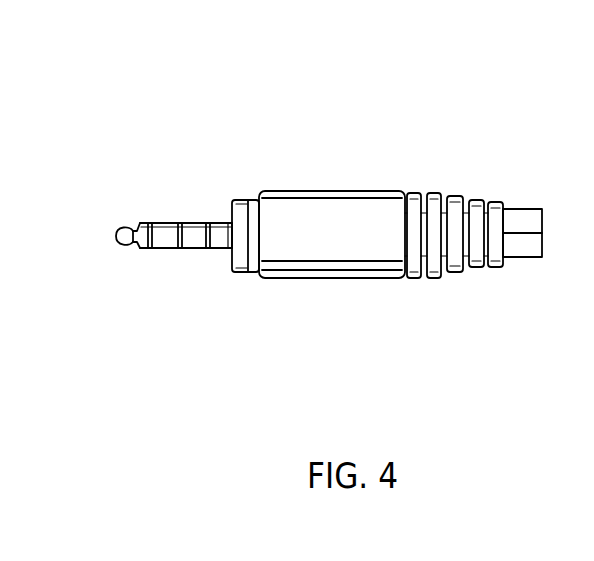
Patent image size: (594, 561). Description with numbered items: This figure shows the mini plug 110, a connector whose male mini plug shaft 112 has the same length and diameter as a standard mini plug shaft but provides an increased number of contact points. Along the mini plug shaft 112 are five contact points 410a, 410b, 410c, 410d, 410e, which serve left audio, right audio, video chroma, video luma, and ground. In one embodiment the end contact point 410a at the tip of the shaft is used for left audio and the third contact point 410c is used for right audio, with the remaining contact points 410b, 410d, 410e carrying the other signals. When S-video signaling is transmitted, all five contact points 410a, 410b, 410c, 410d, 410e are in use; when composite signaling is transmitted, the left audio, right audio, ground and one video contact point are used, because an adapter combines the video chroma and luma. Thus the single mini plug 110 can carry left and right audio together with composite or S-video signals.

The mini plug 110 is at (378, 117).
The mini plug shaft 112 is at (121, 239).
The end contact point 410a is at (123, 245).
The contact point 410b is at (164, 241).
The third contact point 410c is at (195, 241).
The contact point 410d is at (220, 243).
The contact point 410e is at (242, 250).